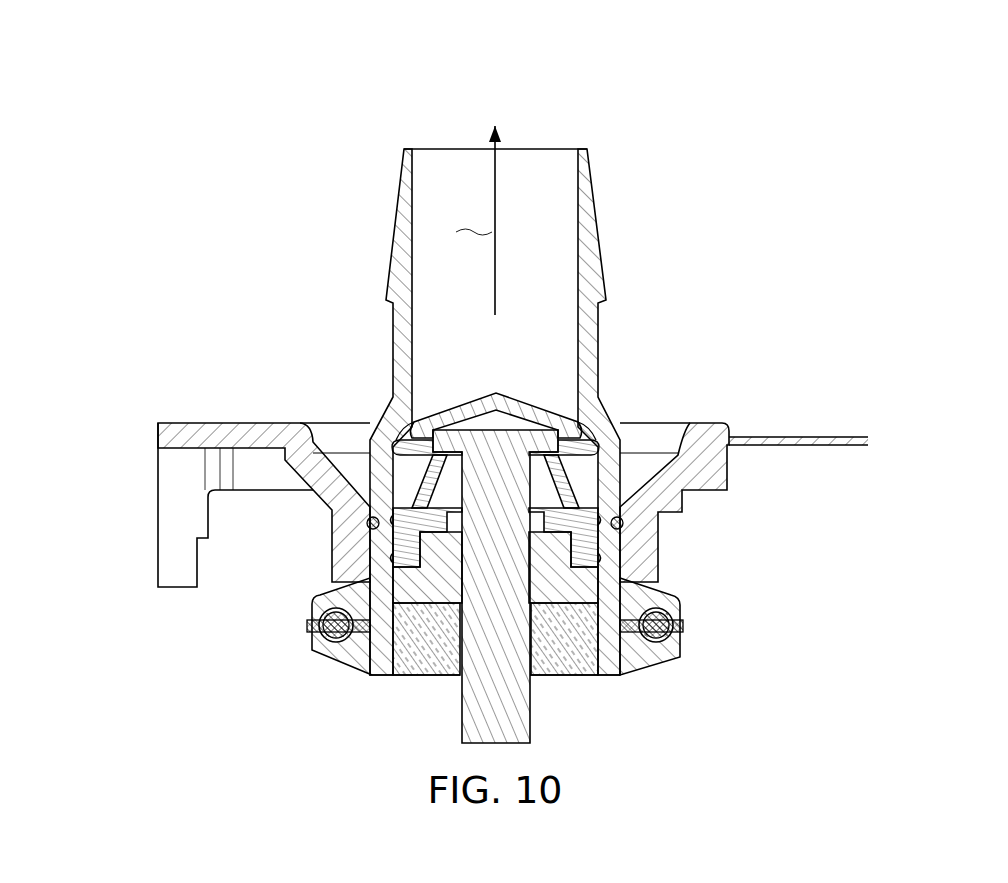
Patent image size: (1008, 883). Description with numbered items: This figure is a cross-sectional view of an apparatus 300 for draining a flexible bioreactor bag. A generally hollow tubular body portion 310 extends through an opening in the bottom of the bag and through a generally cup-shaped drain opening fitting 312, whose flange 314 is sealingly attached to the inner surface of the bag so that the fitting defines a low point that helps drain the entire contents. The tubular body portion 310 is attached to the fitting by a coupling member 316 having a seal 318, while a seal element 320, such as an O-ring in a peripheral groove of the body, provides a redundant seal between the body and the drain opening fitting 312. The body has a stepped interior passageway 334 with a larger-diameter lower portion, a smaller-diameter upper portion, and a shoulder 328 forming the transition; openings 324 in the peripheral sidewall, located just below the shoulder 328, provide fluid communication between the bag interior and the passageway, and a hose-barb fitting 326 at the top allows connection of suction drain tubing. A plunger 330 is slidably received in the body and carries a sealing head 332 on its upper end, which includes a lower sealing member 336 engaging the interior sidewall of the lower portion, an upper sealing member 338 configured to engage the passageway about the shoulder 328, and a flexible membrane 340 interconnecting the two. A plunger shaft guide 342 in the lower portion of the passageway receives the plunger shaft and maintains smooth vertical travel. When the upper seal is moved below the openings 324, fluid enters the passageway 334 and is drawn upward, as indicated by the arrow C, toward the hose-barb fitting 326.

The apparatus 300 is at (453, 73).
The tubular body portion 310 is at (386, 333).
The drain opening fitting 312 is at (332, 538).
The flange 314 is at (197, 435).
The coupling member 316 is at (338, 658).
The seal 318 is at (306, 627).
The seal element 320 is at (332, 509).
The openings 324 is at (594, 477).
The hose-barb fitting 326 is at (590, 211).
The shoulder 328 is at (422, 437).
The plunger 330 is at (503, 448).
The sealing head 332 is at (591, 420).
The interior passageway 334 is at (415, 168).
The lower sealing member 336 is at (604, 539).
The upper sealing member 338 is at (610, 446).
The membrane 340 is at (417, 480).
The plunger shaft guide 342 is at (552, 586).